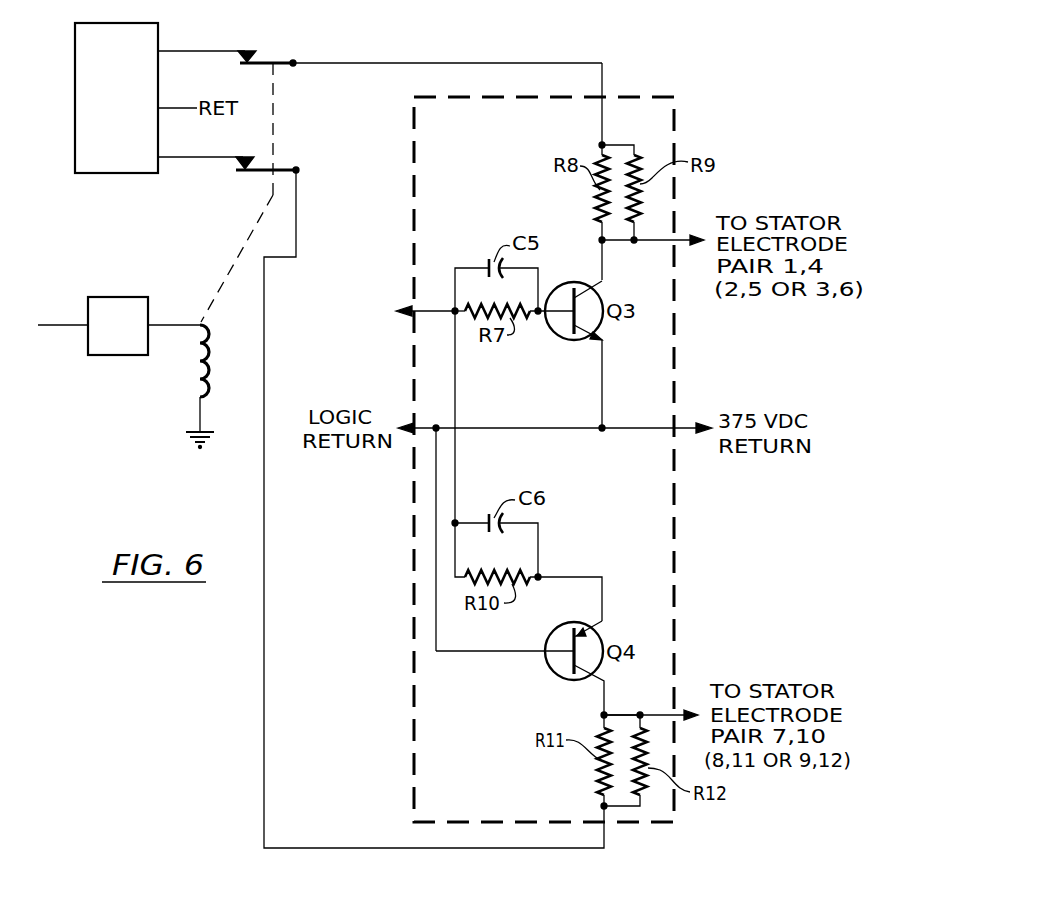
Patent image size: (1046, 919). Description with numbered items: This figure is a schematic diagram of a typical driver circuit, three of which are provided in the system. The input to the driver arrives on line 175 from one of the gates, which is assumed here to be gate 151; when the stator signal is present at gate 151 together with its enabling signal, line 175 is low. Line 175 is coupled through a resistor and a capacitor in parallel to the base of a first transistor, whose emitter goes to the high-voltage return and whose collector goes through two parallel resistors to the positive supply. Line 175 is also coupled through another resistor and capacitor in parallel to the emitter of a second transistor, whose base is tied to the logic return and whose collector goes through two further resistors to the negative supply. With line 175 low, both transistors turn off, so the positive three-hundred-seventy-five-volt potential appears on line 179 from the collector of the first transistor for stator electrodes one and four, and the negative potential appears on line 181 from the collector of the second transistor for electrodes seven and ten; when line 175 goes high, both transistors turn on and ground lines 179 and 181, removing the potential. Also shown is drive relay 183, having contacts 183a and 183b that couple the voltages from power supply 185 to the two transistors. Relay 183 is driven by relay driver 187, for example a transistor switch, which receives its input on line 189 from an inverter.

The relay contact 183a is at (249, 56).
The relay contact 183b is at (247, 165).
The power supply 185 is at (115, 173).
The relay driver 187 is at (149, 302).
The input line 189 is at (50, 325).
The drive relay 183 is at (200, 377).
The input line 175 is at (434, 311).
The output line 179 is at (686, 238).
The output line 181 is at (664, 713).
The gate 151 is at (366, 316).